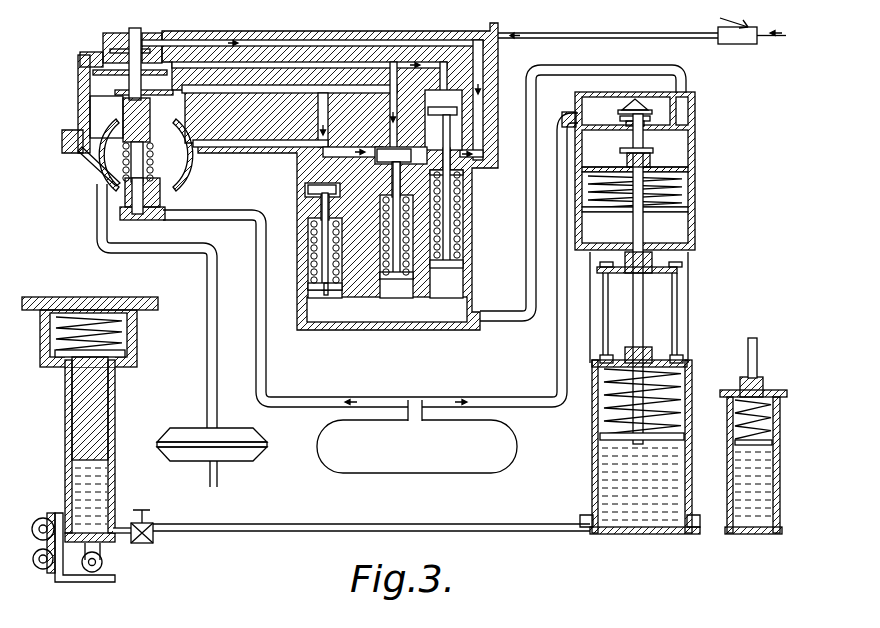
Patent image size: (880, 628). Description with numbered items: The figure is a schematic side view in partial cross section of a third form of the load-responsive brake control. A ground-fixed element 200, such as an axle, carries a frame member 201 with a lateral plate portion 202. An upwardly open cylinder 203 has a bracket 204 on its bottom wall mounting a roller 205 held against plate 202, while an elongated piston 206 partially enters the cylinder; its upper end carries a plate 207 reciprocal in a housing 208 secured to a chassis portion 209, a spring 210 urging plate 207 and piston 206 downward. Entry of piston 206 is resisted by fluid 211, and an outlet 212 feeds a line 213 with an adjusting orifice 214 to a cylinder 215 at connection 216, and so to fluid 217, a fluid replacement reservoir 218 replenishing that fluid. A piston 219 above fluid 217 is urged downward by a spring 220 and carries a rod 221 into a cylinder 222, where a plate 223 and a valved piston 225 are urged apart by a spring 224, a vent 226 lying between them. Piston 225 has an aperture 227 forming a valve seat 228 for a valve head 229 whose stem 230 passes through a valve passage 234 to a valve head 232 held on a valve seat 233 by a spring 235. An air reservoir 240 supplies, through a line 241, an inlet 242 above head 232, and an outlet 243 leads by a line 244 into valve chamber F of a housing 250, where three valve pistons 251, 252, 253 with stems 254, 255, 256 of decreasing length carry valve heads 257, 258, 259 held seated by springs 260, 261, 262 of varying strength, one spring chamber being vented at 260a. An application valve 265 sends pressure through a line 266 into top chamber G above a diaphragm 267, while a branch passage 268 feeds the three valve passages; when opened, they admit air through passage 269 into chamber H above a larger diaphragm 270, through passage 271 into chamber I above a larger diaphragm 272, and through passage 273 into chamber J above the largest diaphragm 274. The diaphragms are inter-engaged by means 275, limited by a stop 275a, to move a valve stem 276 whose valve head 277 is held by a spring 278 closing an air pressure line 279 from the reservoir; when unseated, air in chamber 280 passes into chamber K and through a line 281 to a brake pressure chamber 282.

The element fixed in relation to the ground 200 is at (47, 566).
The frame member 201 is at (60, 515).
The plate portion 202 is at (110, 583).
The cylinder 203 is at (70, 478).
The bracket 204 is at (104, 556).
The roller 205 is at (106, 568).
The piston 206 is at (100, 412).
The plate 207 is at (125, 353).
The housing 208 is at (45, 366).
The truck chassis portion 209 is at (70, 297).
The spring 210 is at (112, 330).
The supply of fluid 211 is at (107, 487).
The outlet 212 is at (118, 528).
The line 213 is at (310, 522).
The adjusting orifice 214 is at (150, 510).
The cylinder 215 is at (594, 472).
The connection of line to cylinder 216 is at (585, 526).
The supply of fluid 217 is at (627, 520).
The fluid replacement reservoir 218 is at (762, 534).
The piston 219 is at (627, 434).
The spring 220 is at (676, 386).
The rod 221 is at (643, 405).
The cylinder 222 is at (694, 244).
The plate 223 is at (693, 212).
The spring 224 is at (683, 184).
The valved piston 225 is at (693, 170).
The vent 226 is at (689, 207).
The aperture 227 is at (646, 156).
The valve seat 228 is at (652, 163).
The valve head 229 is at (644, 150).
The stem 230 is at (635, 140).
The valve head 232 is at (652, 117).
The valve seat 233 is at (614, 122).
The valve passage 234 is at (646, 128).
The spring 235 is at (632, 99).
The air reservoir 240 is at (458, 471).
The line 241 is at (558, 366).
The inlet 242 is at (572, 115).
The outlet 243 is at (680, 87).
The line 244 is at (512, 318).
The housing 250 is at (345, 33).
The valve piston 251 is at (464, 264).
The valve piston 252 is at (393, 274).
The valve piston 253 is at (323, 284).
The stem 254 is at (448, 237).
The stem 255 is at (395, 276).
The stem 256 is at (325, 283).
The valve head 257 is at (457, 112).
The valve head 258 is at (378, 158).
The valve head 259 is at (318, 190).
The spring 260 is at (463, 190).
The vented spring chamber 260a is at (463, 207).
The spring 261 is at (407, 266).
The spring 262 is at (335, 284).
The application valve 265 is at (750, 43).
The line 266 is at (578, 33).
The diaphragm 267 is at (112, 44).
The branch passage 268 is at (483, 70).
The passage 269 is at (310, 62).
The diaphragm 270 is at (95, 72).
The passage 271 is at (250, 86).
The diaphragm 272 is at (92, 118).
The passage 273 is at (250, 154).
The diaphragm 274 is at (65, 143).
The inter-engaging means 275 is at (108, 36).
The stop 275a is at (138, 28).
The valve stem 276 is at (138, 193).
The valve head 277 is at (148, 224).
The spring 278 is at (130, 158).
The air pressure line 279 is at (256, 293).
The chamber 280 is at (148, 200).
The line 281 is at (170, 256).
The brake pressure chamber 282 is at (245, 457).
The valve chamber F is at (357, 316).
The top chamber G is at (150, 42).
The chamber H is at (110, 62).
The chamber I is at (118, 92).
The chamber J is at (92, 118).
The chamber K is at (168, 164).